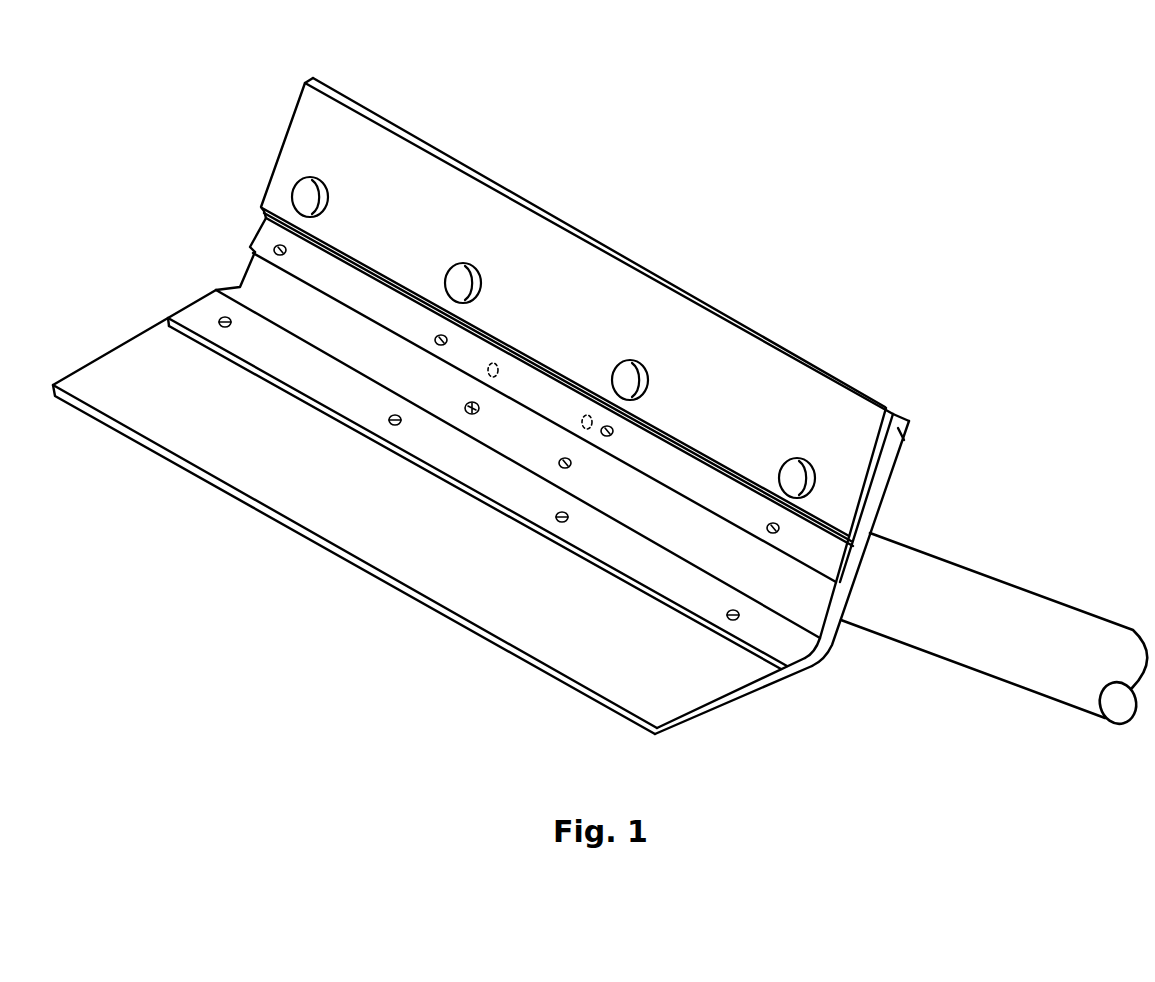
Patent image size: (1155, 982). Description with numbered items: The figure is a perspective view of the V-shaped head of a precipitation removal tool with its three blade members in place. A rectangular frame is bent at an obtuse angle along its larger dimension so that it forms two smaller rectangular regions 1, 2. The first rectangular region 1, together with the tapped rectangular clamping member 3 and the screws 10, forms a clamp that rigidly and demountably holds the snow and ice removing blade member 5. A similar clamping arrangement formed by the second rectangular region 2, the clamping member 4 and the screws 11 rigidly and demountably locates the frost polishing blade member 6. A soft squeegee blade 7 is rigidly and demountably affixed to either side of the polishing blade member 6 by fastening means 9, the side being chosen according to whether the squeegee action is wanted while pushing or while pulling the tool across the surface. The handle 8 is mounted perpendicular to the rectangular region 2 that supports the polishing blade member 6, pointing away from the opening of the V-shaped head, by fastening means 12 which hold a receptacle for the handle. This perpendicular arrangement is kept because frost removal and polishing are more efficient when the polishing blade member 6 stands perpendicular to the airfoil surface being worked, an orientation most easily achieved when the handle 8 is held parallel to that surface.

The rectangular region 1 is at (776, 680).
The rectangular region 2 is at (828, 648).
The tapped rectangular clamping member 3 is at (200, 318).
The clamping member 4 is at (250, 238).
The snow and ice removing blade member 5 is at (422, 548).
The frost polishing blade member 6 is at (905, 422).
The squeegee blade 7 is at (717, 350).
The handle 8 is at (1008, 610).
The fastening means 9 is at (468, 278).
The screws 10 is at (395, 425).
The screws 11 is at (278, 250).
The fastening means 12 is at (472, 407).